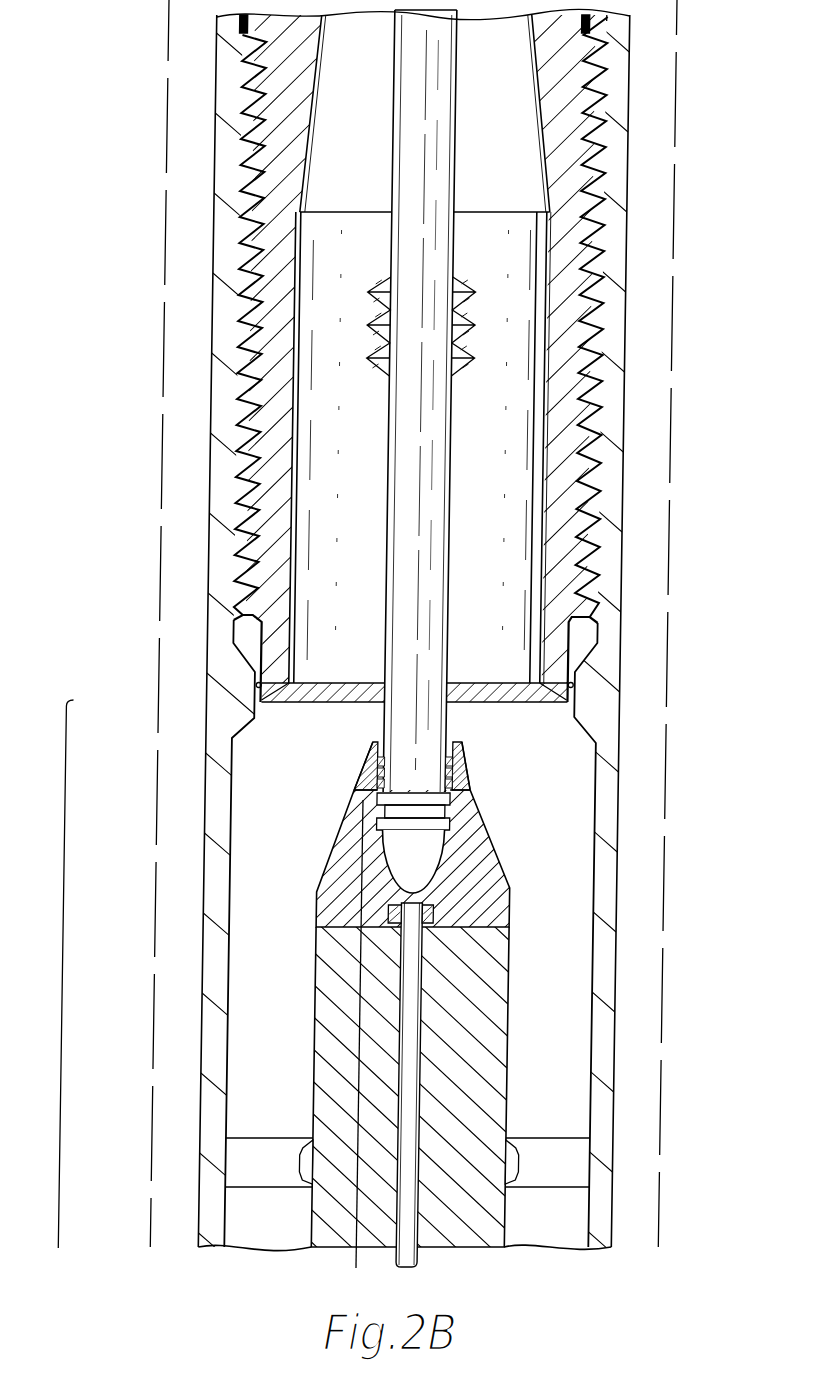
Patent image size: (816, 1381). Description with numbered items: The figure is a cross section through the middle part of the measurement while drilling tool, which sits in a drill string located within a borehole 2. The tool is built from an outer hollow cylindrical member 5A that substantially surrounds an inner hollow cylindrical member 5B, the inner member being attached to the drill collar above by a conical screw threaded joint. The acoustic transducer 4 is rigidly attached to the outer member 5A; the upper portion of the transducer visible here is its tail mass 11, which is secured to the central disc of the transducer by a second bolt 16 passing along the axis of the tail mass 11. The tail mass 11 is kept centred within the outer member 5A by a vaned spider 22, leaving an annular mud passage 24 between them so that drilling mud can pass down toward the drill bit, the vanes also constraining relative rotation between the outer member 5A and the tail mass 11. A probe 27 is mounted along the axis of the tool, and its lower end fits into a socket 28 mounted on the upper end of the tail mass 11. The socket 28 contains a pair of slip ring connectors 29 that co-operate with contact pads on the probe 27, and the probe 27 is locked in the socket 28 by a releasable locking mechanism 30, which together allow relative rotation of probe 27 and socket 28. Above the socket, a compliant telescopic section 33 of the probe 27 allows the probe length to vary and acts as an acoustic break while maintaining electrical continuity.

The borehole 2 is at (684, 1003).
The acoustic transducer 4 is at (77, 972).
The outer hollow cylindrical member 5A is at (612, 702).
The inner hollow cylindrical member 5B is at (576, 550).
The tail mass 11 is at (528, 1217).
The second bolt 16 is at (418, 1212).
The spider 22 is at (592, 1165).
The annular mud passage 24 is at (591, 1100).
The probe 27 is at (450, 848).
The socket 28 is at (515, 910).
The slip ring connectors 29 is at (385, 827).
The releasable locking mechanism 30 is at (481, 768).
The compliant telescopic section 33 is at (478, 347).